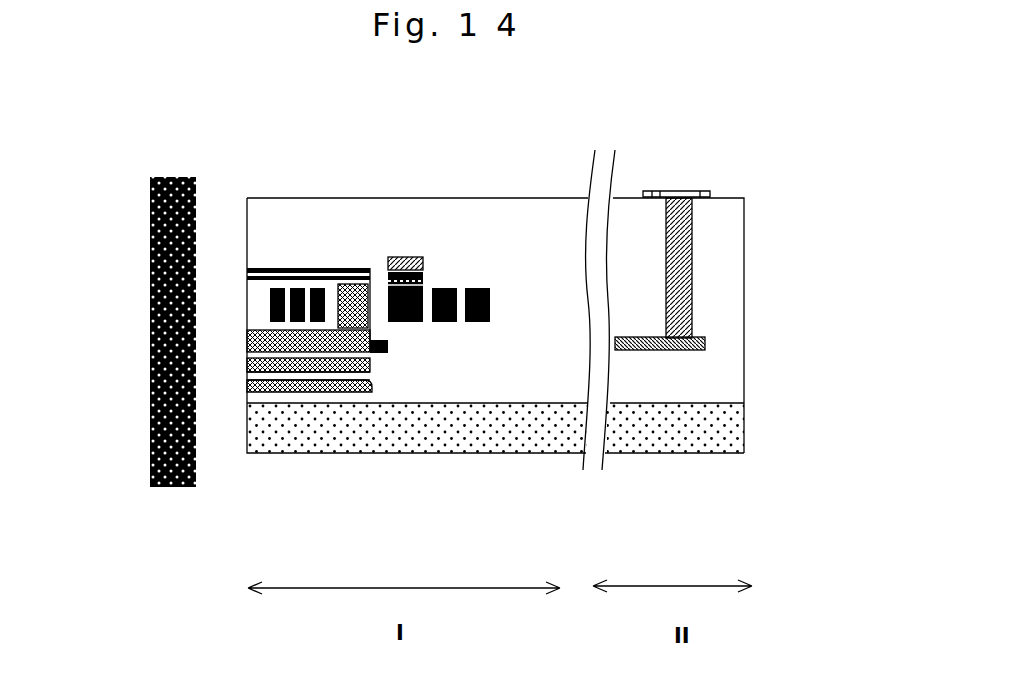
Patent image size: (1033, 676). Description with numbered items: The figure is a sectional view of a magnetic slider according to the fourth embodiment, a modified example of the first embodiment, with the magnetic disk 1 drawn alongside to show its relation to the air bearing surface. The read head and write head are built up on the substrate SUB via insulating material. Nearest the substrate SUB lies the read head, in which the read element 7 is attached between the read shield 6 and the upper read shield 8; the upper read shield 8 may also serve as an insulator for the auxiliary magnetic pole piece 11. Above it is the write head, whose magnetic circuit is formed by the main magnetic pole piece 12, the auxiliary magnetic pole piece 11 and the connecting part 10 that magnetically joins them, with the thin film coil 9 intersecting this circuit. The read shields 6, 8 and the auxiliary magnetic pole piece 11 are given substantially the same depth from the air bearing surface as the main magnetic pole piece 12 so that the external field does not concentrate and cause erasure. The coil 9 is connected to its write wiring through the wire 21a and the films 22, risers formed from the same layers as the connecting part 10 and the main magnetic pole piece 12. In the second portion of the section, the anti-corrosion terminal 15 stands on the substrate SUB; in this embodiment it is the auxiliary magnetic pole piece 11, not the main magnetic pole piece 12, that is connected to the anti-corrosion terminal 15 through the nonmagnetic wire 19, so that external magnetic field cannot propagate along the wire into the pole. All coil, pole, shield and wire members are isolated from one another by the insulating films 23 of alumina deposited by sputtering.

The magnetic disk 1 is at (152, 398).
The read shield 6 is at (348, 386).
The read element 7 is at (258, 376).
The upper read shield 8 is at (303, 365).
The thin film coil 9 is at (275, 293).
The connecting part 10 is at (362, 295).
The auxiliary magnetic pole piece 11 is at (350, 345).
The main magnetic pole piece 12 is at (298, 276).
The anti-corrosion terminal 15 is at (693, 192).
The nonmagnetic wire 19 is at (379, 340).
The wire 21a is at (413, 254).
The films 22 is at (423, 277).
The insulating films 23 is at (677, 363).
The substrate SUB is at (535, 422).